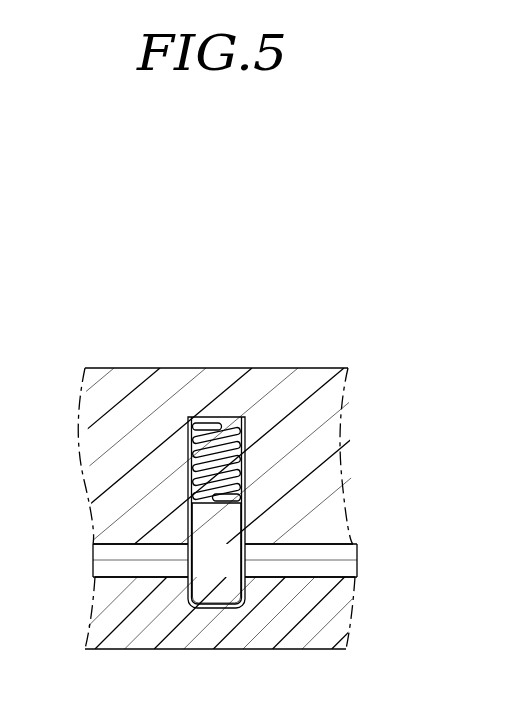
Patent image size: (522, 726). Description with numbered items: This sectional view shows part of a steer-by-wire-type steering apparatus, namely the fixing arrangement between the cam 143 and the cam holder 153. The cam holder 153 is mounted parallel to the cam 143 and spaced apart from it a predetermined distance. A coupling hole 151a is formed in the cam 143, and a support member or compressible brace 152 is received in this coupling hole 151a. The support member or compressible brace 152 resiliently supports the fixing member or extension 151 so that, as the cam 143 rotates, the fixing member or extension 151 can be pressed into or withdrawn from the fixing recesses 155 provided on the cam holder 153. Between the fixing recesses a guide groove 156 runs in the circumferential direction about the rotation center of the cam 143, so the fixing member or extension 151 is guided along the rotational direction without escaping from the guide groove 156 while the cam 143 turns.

The cam 143 is at (287, 390).
The fixing member or extension 151 is at (208, 522).
The coupling hole 151a is at (190, 445).
The support member or compressible brace 152 is at (205, 432).
The cam holder 153 is at (282, 628).
The accommodating hole 155 is at (215, 609).
The guide groove 156 is at (332, 565).